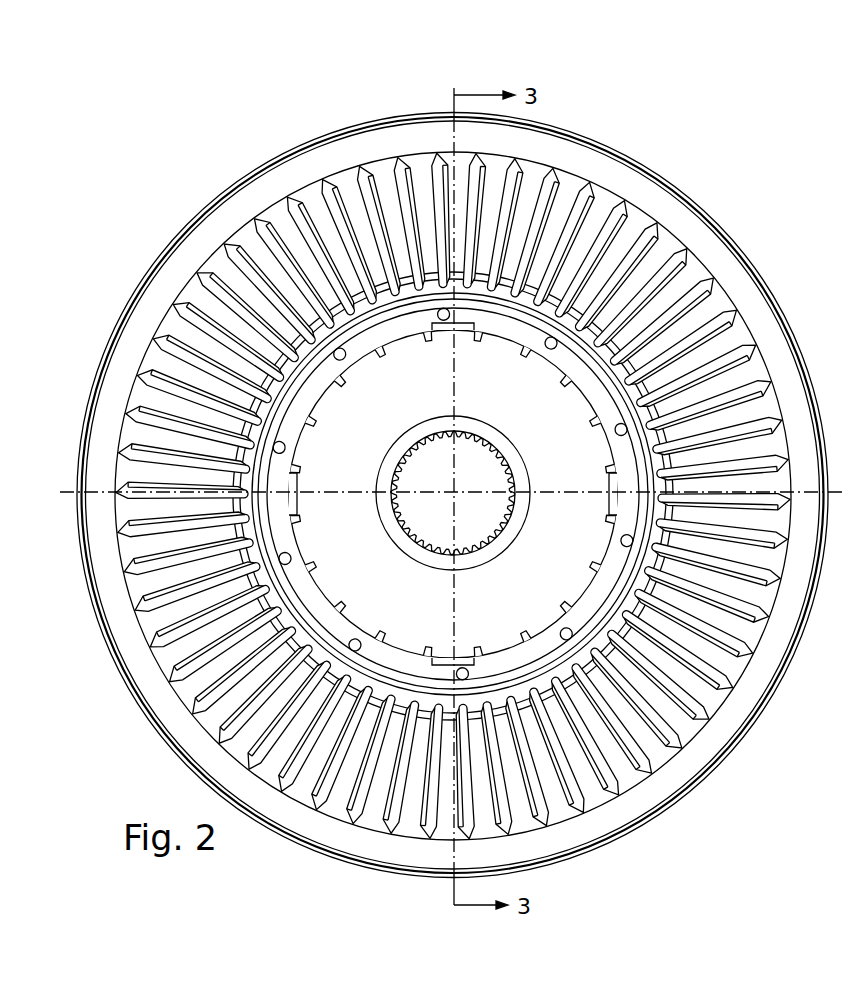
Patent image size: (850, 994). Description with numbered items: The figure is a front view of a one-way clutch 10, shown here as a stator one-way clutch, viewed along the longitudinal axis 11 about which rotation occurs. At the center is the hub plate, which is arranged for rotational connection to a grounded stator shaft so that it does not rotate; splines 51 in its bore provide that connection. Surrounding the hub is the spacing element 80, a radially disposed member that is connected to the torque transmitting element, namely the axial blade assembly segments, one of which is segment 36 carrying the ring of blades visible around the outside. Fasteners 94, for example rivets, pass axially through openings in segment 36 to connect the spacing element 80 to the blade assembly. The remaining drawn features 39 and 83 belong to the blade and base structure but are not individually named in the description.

The one-way clutch 10 is at (663, 142).
The longitudinal axis 11 is at (102, 490).
The axial blade assembly segment 36 is at (320, 162).
The fin base ring 39 is at (577, 797).
The splines 51 is at (550, 518).
The spacing element 80 is at (528, 400).
The fins 83 is at (752, 657).
The fasteners 94 is at (626, 427).